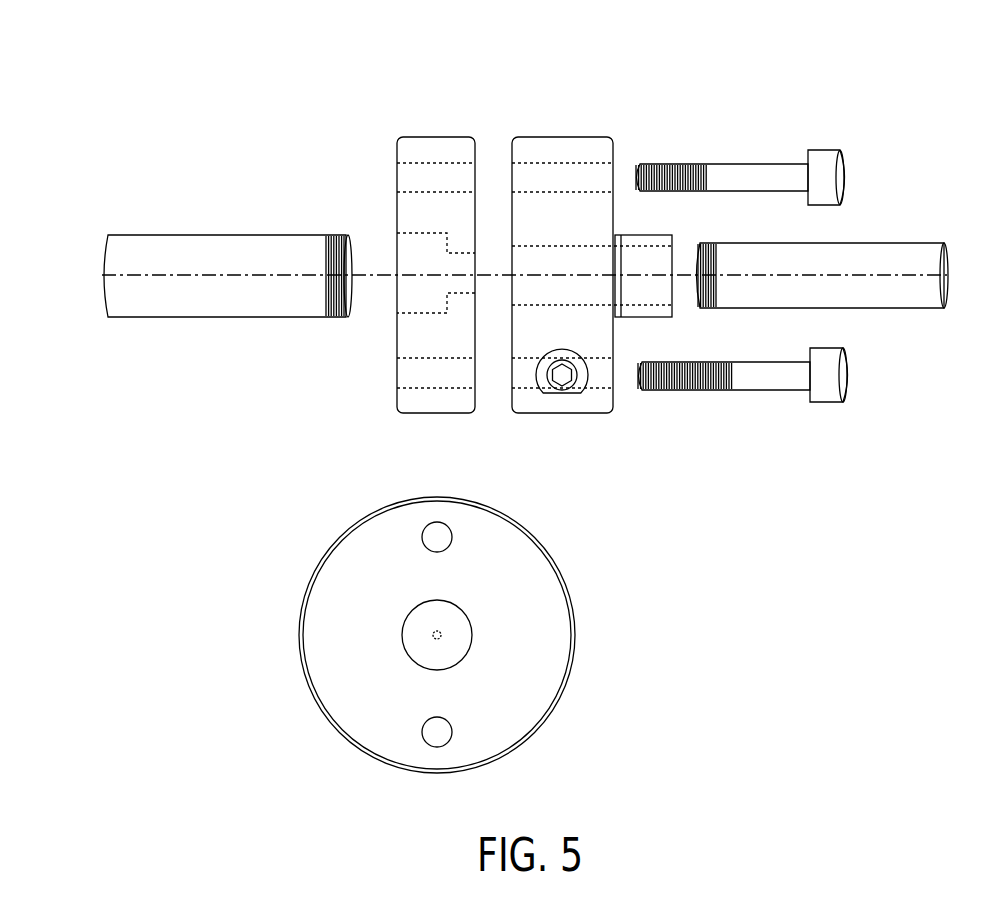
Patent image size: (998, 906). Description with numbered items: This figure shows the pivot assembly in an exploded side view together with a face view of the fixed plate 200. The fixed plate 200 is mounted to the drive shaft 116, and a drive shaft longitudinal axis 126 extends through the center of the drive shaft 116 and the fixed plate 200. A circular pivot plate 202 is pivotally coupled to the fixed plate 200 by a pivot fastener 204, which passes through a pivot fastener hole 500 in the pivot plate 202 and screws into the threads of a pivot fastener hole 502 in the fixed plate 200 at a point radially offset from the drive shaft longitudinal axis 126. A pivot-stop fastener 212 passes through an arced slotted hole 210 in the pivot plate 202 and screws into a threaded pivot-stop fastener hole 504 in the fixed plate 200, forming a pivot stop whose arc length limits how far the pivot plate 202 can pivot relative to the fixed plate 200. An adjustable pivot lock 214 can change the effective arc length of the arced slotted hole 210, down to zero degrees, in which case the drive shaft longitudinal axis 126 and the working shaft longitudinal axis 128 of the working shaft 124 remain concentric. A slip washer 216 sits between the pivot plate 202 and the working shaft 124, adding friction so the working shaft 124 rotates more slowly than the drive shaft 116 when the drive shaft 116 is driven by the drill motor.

The drive shaft 116 is at (208, 233).
The drive shaft longitudinal axis 126 is at (215, 272).
The fixed plate 200 is at (437, 133).
The pivot fastener hole 502 is at (412, 181).
The pivot-stop fastener hole 504 is at (410, 368).
The pivot fastener hole 500 is at (528, 182).
The pivot plate 202 is at (607, 133).
The slip washer 216 is at (615, 233).
The arced slotted hole 210 is at (595, 378).
The adjustable pivot lock 214 is at (562, 395).
The pivot fastener 204 is at (827, 150).
The pivot-stop fastener 212 is at (827, 402).
The working shaft 124 is at (877, 243).
The working shaft longitudinal axis 128 is at (860, 277).